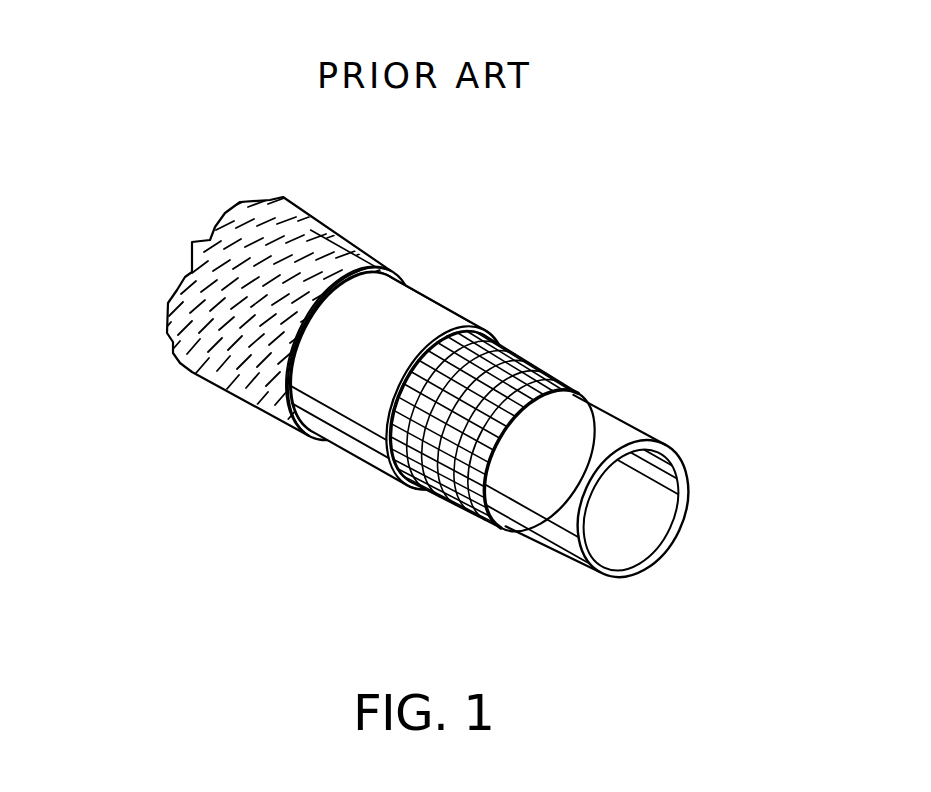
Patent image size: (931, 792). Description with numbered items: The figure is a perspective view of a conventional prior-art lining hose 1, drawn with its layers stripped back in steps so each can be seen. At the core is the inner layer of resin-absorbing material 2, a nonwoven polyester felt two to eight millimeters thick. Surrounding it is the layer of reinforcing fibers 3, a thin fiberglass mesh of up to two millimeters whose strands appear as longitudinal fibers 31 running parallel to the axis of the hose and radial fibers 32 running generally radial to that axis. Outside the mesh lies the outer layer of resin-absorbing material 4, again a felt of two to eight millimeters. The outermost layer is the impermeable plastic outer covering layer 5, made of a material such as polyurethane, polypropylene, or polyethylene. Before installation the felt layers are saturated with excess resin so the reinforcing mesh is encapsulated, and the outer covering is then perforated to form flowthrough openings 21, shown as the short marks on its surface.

The lining hose 1 is at (431, 397).
The inner layer of resin-absorbing material 2 is at (557, 553).
The flowthrough openings 21 is at (290, 228).
The layer of reinforcing fibers 3 is at (510, 442).
The longitudinal fibers 31 is at (497, 344).
The radial fibers 32 is at (560, 408).
The outer layer of resin-absorbing material 4 is at (362, 456).
The outer covering layer 5 is at (222, 388).